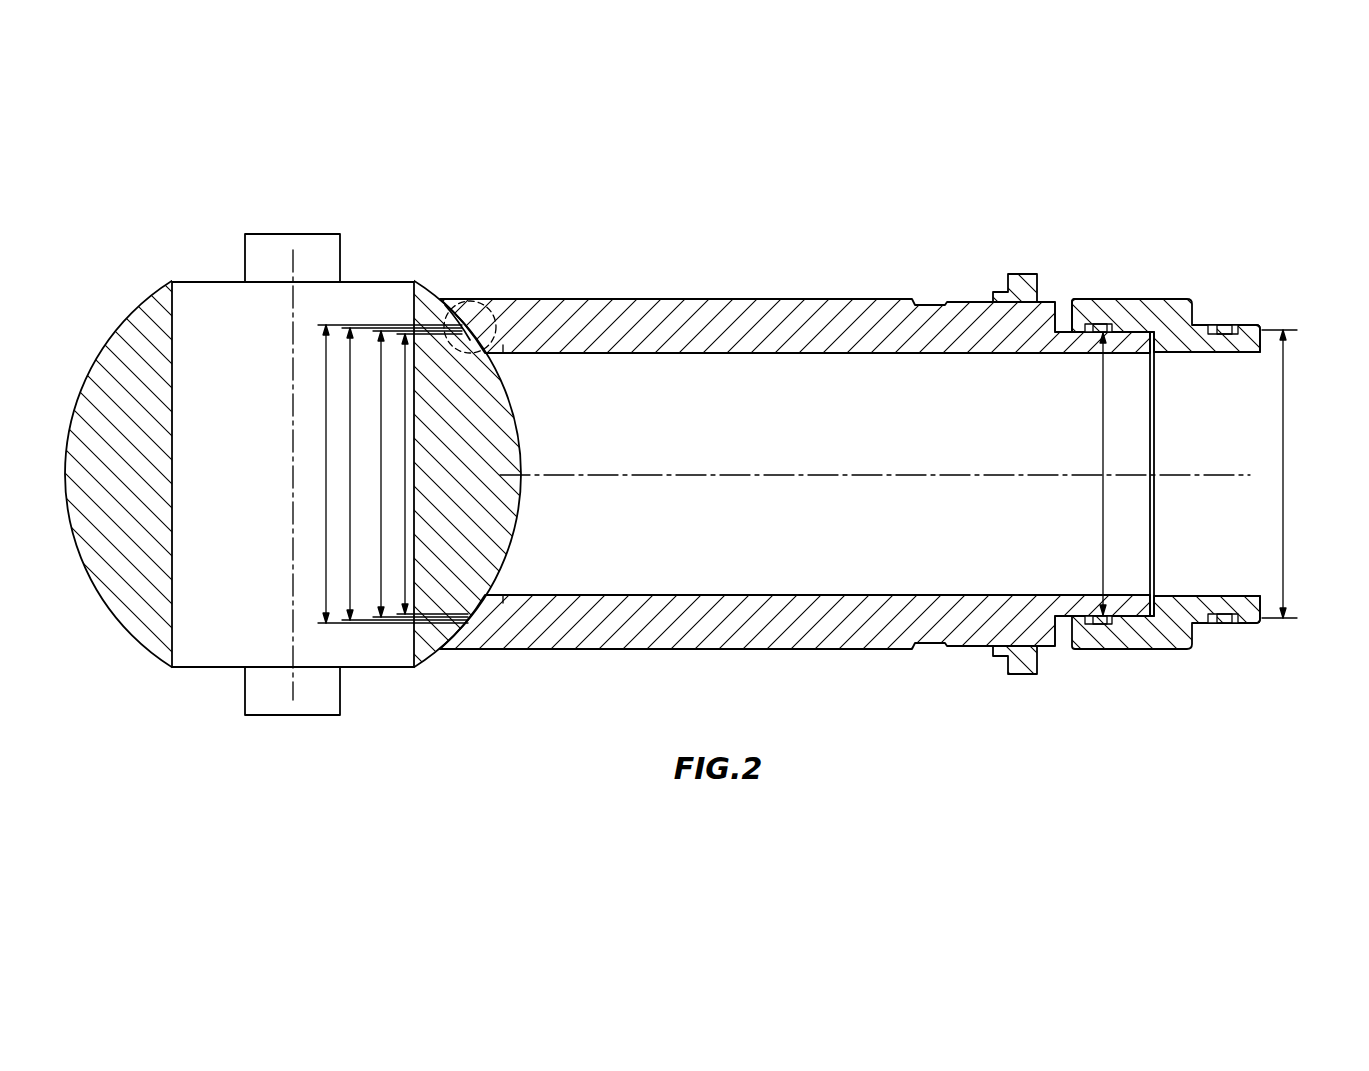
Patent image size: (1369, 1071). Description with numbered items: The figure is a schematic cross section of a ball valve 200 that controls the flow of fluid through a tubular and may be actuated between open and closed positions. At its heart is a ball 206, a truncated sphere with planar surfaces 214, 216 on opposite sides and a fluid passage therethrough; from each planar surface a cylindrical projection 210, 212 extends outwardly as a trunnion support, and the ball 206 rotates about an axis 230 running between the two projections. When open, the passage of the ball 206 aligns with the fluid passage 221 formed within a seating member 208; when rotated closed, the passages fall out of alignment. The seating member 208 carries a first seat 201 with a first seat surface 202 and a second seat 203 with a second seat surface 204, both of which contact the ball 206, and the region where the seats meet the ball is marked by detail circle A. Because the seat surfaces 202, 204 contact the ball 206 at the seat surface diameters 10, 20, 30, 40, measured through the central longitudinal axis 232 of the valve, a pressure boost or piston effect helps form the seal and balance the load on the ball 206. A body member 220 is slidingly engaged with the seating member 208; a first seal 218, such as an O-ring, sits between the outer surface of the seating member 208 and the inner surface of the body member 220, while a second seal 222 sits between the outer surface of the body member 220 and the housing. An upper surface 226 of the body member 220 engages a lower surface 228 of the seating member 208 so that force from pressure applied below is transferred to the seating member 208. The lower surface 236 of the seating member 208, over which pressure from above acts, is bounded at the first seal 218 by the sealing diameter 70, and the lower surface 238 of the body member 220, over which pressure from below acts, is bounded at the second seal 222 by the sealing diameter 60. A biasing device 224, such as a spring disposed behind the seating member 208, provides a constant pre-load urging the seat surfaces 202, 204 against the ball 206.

The ball valve 200 is at (622, 185).
The diameter 10 is at (326, 403).
The diameter 20 is at (350, 430).
The diameter 30 is at (381, 472).
The diameter 40 is at (405, 512).
The diameter 60 is at (1285, 418).
The diameter 70 is at (1101, 428).
The detail region A is at (457, 305).
The first seat 201 is at (476, 322).
The first seat surface 202 is at (495, 365).
The second seat 203 is at (450, 372).
The second seat surface 204 is at (468, 335).
The ball 206 is at (495, 437).
The seating member 208 is at (745, 299).
The cylindrical projection 210 is at (312, 234).
The cylindrical projection 212 is at (275, 715).
The planar surface 214 is at (203, 667).
The planar surface 216 is at (200, 282).
The first seal 218 is at (1100, 334).
The body member 220 is at (1125, 299).
The fluid passage 221 is at (622, 362).
The second seal 222 is at (1228, 325).
The biasing device 224 is at (1006, 274).
The upper surface 226 is at (1160, 334).
The lower surface 228 is at (1151, 354).
The axis 230 is at (290, 372).
The central longitudinal axis 232 is at (775, 475).
The lower surface 236 is at (1060, 302).
The lower surface 238 is at (1262, 345).